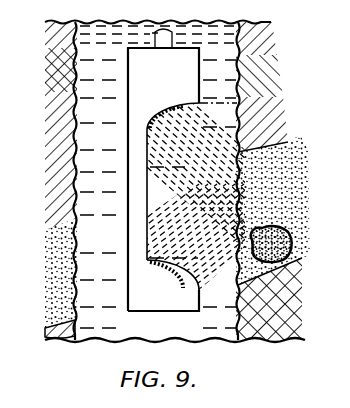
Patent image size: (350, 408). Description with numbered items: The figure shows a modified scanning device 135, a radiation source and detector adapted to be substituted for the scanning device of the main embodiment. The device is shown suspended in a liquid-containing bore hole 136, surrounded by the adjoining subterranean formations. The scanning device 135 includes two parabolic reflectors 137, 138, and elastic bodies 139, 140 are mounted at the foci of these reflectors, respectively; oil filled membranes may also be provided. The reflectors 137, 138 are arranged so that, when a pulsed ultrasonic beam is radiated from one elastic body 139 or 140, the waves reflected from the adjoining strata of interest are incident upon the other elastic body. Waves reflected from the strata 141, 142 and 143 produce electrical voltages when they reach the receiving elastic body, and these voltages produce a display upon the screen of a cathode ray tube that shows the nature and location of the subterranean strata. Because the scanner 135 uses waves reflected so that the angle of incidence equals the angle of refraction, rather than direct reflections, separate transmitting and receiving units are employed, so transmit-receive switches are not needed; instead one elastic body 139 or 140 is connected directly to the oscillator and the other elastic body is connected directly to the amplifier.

The modified scanning device 135 is at (133, 158).
The liquid-containing bore hole 136 is at (108, 239).
The parabolic reflector 137 is at (148, 266).
The parabolic reflector 138 is at (158, 112).
The elastic body 139 is at (169, 283).
The elastic body 140 is at (165, 137).
The stratum 141 is at (291, 237).
The stratum 142 is at (292, 273).
The stratum 143 is at (250, 317).